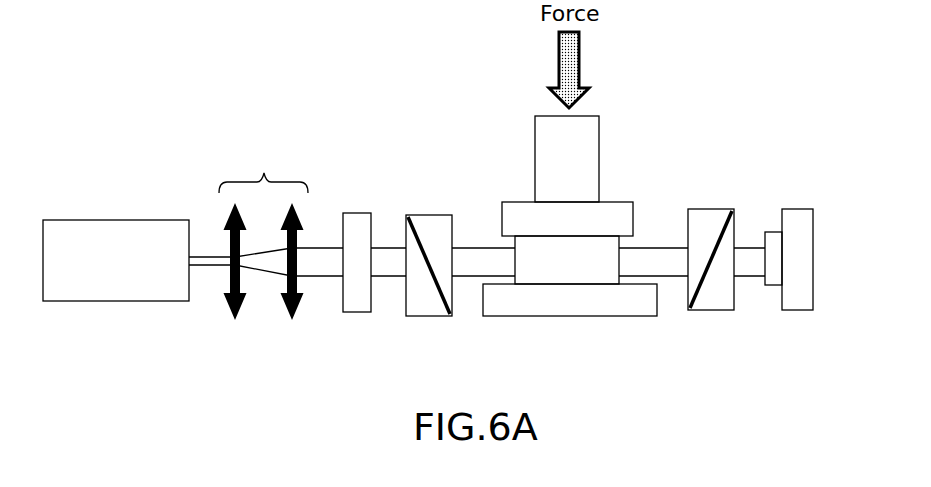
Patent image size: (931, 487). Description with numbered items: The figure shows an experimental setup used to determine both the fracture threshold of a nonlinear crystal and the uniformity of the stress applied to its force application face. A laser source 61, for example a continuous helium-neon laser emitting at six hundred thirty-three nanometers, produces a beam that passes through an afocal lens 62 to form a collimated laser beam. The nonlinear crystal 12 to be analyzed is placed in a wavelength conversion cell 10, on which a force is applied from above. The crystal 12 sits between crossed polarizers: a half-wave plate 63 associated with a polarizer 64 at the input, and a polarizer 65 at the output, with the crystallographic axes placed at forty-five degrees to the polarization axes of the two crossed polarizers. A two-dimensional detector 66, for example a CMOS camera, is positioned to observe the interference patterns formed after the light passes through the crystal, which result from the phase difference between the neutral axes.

The wavelength conversion cell 10 is at (617, 142).
The nonlinear crystal 12 is at (622, 243).
The laser source 61 is at (97, 220).
The afocal lens 62 is at (264, 173).
The half-wave plate 63 is at (357, 310).
The polarizer 64 is at (430, 318).
The polarizer 65 is at (712, 312).
The two-dimensional detector 66 is at (775, 220).